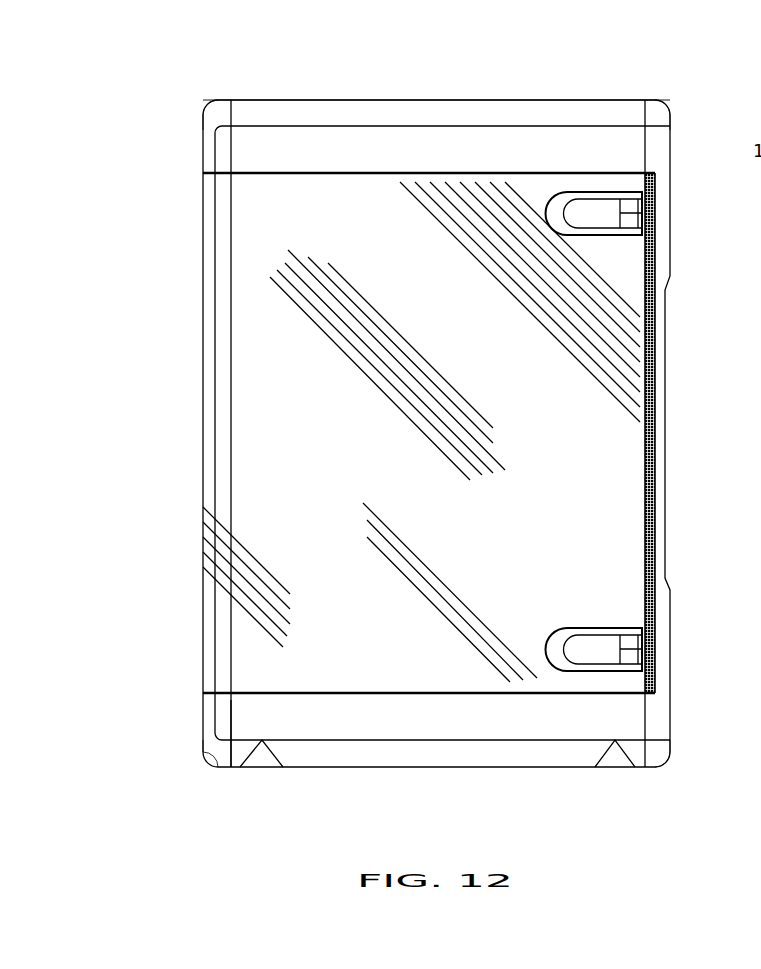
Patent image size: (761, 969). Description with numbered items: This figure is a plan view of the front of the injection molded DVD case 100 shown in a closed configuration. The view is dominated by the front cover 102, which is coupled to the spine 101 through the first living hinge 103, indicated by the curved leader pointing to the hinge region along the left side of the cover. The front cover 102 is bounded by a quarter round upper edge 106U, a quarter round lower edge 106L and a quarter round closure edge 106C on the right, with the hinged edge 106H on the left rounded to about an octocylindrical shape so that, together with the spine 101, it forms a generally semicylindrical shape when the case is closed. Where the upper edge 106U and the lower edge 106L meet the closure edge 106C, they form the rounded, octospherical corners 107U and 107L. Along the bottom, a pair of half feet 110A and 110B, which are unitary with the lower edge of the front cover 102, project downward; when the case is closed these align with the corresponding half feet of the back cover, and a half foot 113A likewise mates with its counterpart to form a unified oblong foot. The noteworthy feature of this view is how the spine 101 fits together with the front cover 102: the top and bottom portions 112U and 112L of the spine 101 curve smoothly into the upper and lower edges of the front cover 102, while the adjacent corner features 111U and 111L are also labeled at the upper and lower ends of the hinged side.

The DVD case 100 is at (246, 64).
The spine 101 is at (208, 593).
The front cover 102 is at (413, 142).
The first living hinge 103 is at (220, 203).
The upper edge 106U is at (528, 115).
The closure edge 106C is at (658, 157).
The hinged edge 106H is at (222, 283).
The lower edge 106L is at (445, 755).
The octospherical corner 107U is at (655, 115).
The octospherical corner 107L is at (657, 750).
The half foot 110A is at (262, 757).
The half foot 110B is at (615, 757).
The upper left inner corner 111U is at (224, 114).
The lower left inner corner 111L is at (225, 752).
The top portion of the spine 112U is at (208, 115).
The bottom portion of the spine 112L is at (213, 760).
The half foot 113A is at (650, 417).